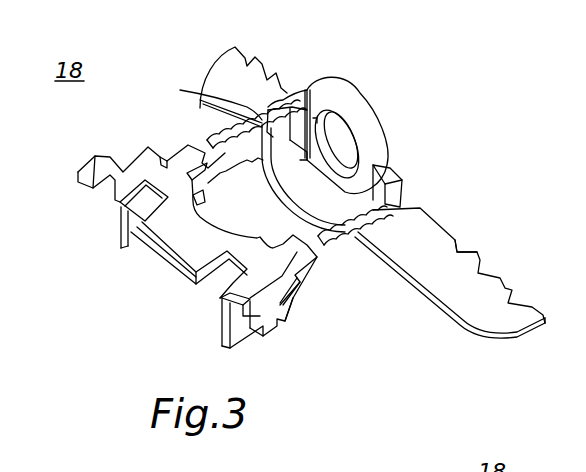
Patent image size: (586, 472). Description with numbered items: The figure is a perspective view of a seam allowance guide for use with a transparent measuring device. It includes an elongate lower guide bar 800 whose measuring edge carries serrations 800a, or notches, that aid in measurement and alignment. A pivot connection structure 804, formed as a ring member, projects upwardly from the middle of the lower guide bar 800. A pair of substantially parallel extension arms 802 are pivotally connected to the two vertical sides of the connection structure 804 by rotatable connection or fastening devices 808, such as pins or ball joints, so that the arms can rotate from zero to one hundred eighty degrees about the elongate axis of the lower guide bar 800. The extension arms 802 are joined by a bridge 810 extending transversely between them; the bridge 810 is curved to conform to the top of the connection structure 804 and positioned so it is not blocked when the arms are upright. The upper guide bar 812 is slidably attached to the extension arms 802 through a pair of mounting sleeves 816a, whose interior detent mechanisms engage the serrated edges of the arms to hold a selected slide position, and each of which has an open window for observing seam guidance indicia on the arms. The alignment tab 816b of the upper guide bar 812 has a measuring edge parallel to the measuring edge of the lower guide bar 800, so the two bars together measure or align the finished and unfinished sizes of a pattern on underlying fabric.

The lower guide bar 800 is at (491, 324).
The serrations 800a is at (468, 240).
The extension arms 802 is at (213, 148).
The pivot connection structure 804 is at (362, 113).
The rotatable connection or fastening devices 808 is at (310, 92).
The bridge 810 is at (200, 99).
The upper guide bar 812 is at (375, 215).
The mounting sleeves 816a is at (192, 152).
The alignment tab 816b is at (175, 247).